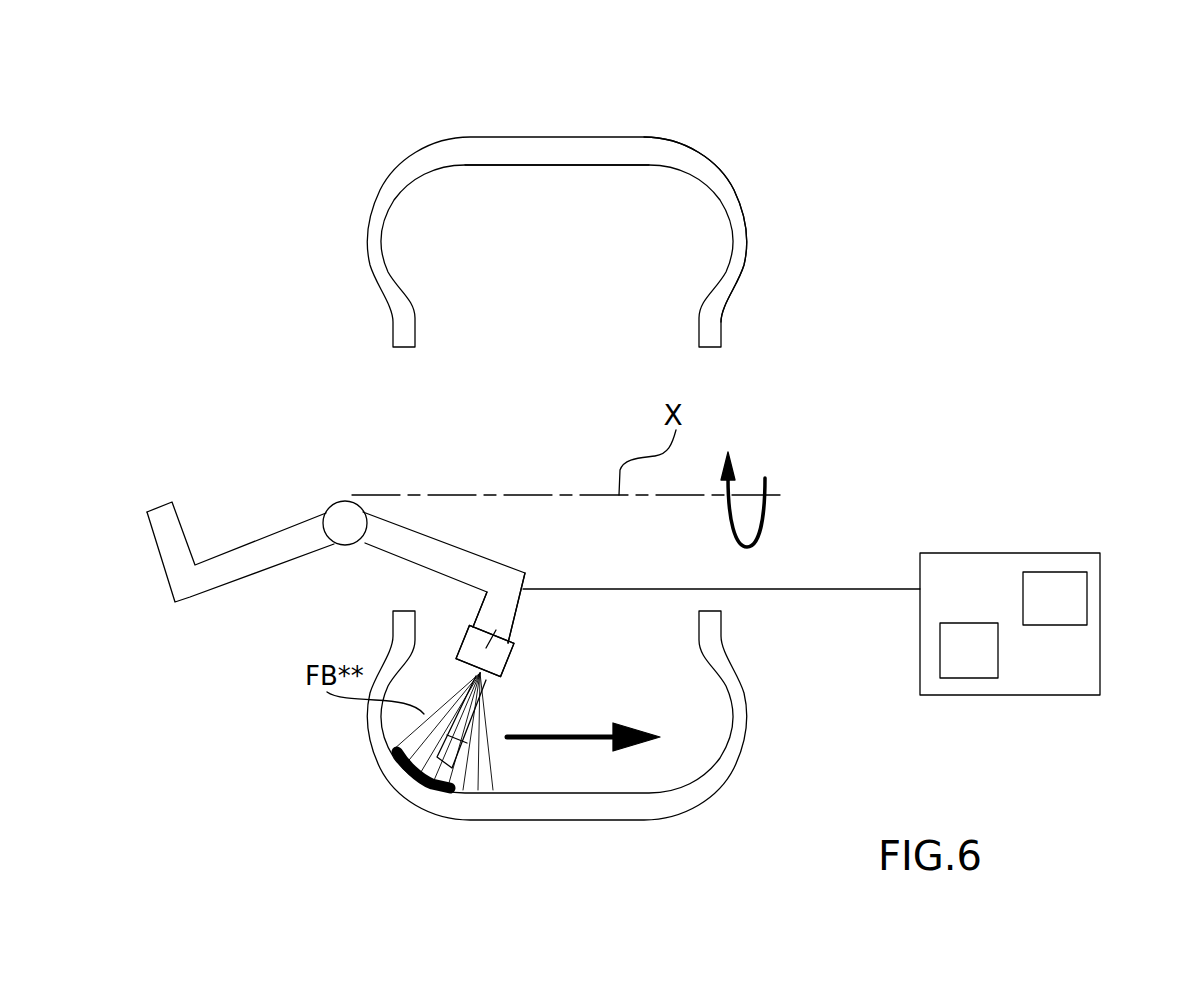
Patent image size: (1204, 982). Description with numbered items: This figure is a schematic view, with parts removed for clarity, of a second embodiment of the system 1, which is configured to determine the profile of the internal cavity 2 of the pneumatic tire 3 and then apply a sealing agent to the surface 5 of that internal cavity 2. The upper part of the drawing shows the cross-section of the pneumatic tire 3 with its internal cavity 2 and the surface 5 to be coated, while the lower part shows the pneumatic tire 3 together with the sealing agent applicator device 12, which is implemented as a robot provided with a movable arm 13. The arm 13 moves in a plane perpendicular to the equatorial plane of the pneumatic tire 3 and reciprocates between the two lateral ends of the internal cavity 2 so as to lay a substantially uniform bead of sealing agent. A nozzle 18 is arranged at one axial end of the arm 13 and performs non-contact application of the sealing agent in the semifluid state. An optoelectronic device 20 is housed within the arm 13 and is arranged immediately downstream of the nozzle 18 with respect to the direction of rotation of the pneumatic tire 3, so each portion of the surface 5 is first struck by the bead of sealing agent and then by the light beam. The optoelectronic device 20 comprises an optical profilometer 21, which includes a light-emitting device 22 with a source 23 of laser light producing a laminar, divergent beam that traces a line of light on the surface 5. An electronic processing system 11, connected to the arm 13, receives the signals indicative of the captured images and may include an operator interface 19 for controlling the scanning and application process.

The system 1 is at (642, 196).
The internal cavity 2 is at (591, 196).
The pneumatic tire 3 is at (738, 228).
The surface 5 is at (484, 174).
The electronic processing system 11 is at (1060, 586).
The sealing agent applicator device 12 is at (399, 645).
The arm 13 is at (497, 569).
The nozzle 18 is at (473, 769).
The operator interface 19 is at (1055, 598).
The optoelectronic device 20 is at (522, 698).
The optical profilometer 21 is at (440, 633).
The light-emitting device 22 is at (503, 655).
The source of laser light 23 is at (530, 650).